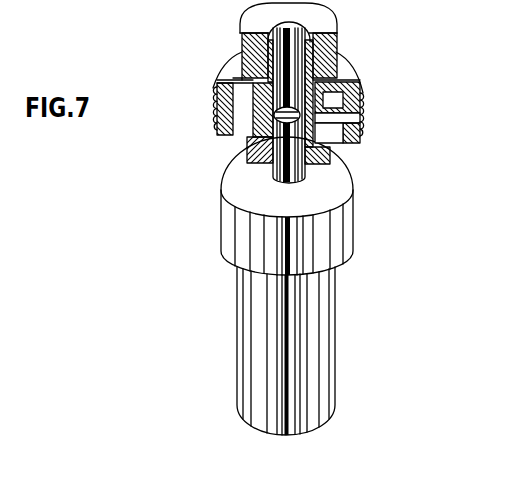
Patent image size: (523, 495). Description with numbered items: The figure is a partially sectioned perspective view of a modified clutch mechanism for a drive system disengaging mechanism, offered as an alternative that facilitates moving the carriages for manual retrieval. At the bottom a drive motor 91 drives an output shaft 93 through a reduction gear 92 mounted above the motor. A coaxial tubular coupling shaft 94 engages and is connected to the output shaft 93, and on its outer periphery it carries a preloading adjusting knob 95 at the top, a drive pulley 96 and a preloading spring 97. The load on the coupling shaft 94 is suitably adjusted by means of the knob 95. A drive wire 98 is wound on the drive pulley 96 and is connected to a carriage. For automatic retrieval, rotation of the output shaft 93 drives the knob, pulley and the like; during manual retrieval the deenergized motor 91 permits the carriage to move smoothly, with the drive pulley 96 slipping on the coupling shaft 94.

The drive motor 91 is at (313, 340).
The reduction gear 92 is at (330, 243).
The output shaft 93 is at (312, 172).
The coaxial tubular coupling shaft 94 is at (323, 63).
The preloading adjusting knob 95 is at (335, 36).
The drive pulley 96 is at (250, 113).
The preloading spring 97 is at (330, 145).
The drive wire 98 is at (213, 94).